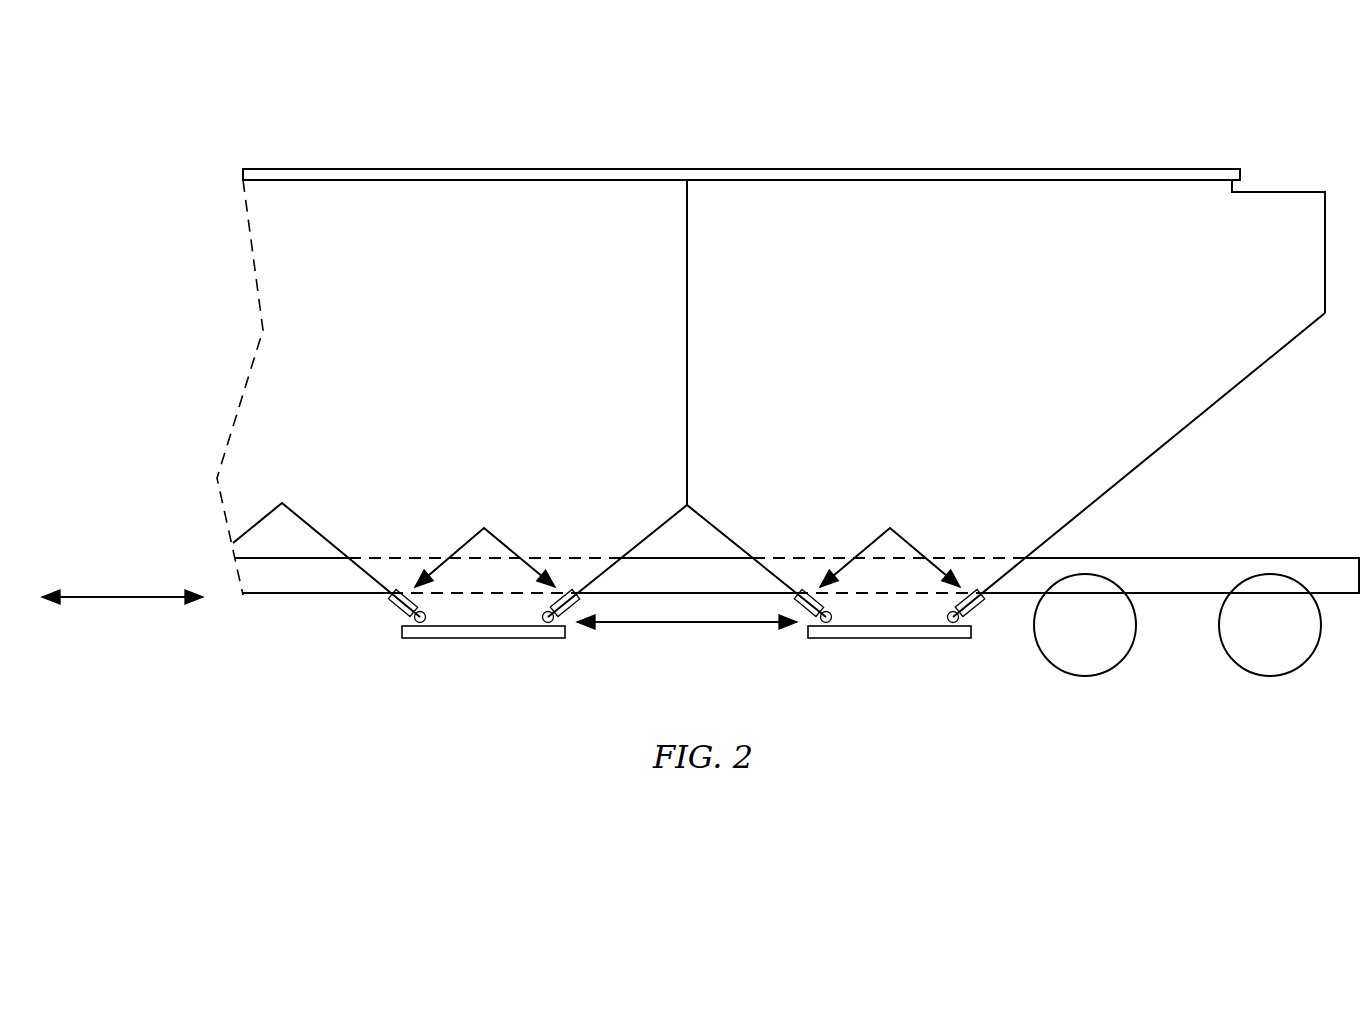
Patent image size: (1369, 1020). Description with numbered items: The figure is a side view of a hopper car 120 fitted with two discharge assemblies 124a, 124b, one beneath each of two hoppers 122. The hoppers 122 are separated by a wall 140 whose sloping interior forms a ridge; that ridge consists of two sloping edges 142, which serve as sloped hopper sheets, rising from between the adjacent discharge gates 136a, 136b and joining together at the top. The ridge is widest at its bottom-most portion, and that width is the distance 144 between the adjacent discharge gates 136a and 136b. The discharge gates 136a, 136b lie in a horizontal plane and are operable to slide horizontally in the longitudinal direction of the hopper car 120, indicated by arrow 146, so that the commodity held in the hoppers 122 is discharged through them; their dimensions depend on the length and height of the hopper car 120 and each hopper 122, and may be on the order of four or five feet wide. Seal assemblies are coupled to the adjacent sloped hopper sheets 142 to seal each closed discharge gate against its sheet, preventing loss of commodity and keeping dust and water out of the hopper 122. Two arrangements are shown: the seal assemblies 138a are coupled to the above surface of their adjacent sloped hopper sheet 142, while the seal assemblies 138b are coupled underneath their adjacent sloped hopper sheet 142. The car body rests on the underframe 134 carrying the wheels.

The hopper car 120 is at (253, 108).
The hopper 122 is at (466, 367).
The discharge assembly 124a is at (380, 647).
The discharge assembly 124b is at (950, 656).
The trailer frame 134 is at (1192, 558).
The discharge gate 136a is at (490, 640).
The discharge gate 136b is at (892, 640).
The seal assembly 138a is at (484, 526).
The seal assembly 138b is at (890, 526).
The wall 140 is at (687, 320).
The sloping edge 142 is at (317, 532).
The distance 144 is at (690, 626).
The arrow 146 is at (120, 595).